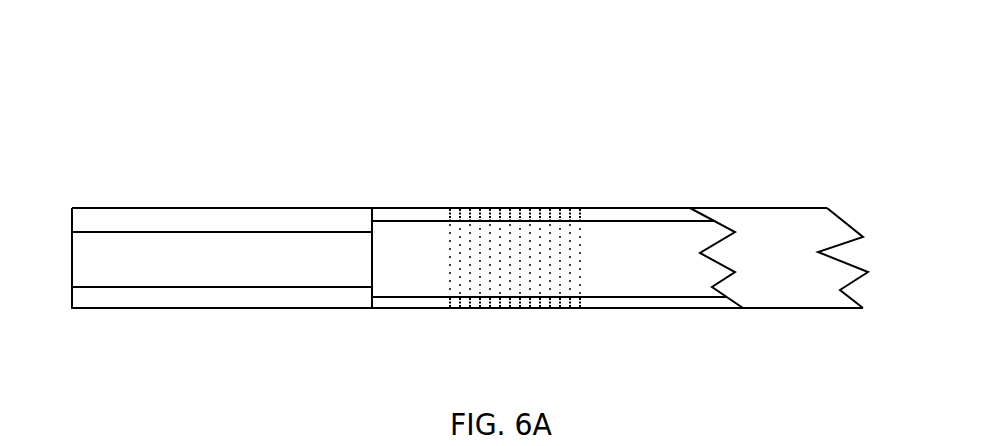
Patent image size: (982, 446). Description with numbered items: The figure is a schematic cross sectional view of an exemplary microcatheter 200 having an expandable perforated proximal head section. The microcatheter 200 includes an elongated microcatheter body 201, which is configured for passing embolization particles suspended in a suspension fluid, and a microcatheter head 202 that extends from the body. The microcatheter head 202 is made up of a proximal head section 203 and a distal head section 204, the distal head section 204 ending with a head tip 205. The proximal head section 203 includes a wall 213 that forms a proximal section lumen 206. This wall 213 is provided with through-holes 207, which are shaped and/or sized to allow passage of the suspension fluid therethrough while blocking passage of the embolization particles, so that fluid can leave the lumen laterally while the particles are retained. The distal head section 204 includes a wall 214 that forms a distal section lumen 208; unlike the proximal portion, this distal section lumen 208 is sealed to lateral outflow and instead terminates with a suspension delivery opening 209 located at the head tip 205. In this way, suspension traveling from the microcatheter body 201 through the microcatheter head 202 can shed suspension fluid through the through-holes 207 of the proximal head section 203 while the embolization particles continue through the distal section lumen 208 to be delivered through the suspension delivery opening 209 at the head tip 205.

The microcatheter 200 is at (320, 57).
The elongated microcatheter body 201 is at (773, 212).
The microcatheter head 202 is at (662, 190).
The proximal head section 203 is at (603, 330).
The distal head section 204 is at (253, 318).
The head tip 205 is at (72, 308).
The proximal section lumen 206 is at (549, 259).
The through-holes 207 is at (465, 312).
The distal section lumen 208 is at (222, 259).
The suspension delivery opening 209 is at (72, 263).
The wall 213 is at (640, 308).
The wall 214 is at (165, 308).